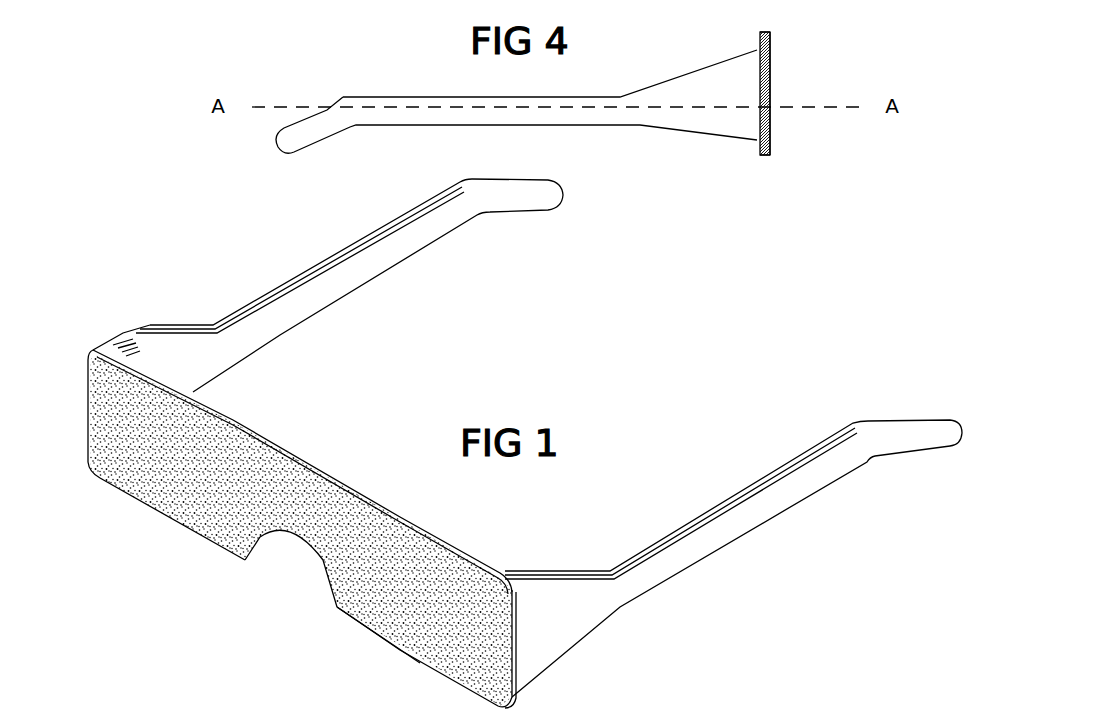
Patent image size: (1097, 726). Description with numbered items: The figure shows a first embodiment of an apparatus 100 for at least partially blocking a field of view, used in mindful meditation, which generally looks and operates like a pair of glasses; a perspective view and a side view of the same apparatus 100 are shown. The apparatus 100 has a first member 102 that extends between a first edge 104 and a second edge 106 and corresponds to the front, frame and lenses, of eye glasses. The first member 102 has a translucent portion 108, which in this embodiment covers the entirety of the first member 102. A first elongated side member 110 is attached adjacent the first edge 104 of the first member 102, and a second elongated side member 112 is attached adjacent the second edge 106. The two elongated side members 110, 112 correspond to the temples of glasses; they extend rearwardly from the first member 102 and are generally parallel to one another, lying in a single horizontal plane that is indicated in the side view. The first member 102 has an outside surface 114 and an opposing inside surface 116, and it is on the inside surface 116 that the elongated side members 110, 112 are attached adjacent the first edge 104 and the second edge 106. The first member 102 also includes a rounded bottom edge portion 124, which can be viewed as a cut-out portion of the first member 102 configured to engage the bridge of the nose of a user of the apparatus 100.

In FIG. 4, the apparatus 100 is at (240, 145).
In FIG. 1, the apparatus 100 is at (860, 500).
In FIG. 4, the first member 102 is at (770, 135).
In FIG. 1, the first member 102 is at (445, 540).
In FIG. 4, the first edge 104 is at (765, 155).
In FIG. 1, the first edge 104 is at (85, 390).
In FIG. 1, the second edge 106 is at (510, 700).
In FIG. 1, the translucent portion 108 is at (365, 632).
In FIG. 4, the first elongated side member 110 is at (700, 130).
In FIG. 1, the first elongated side member 110 is at (245, 305).
In FIG. 1, the second elongated side member 112 is at (508, 575).
In FIG. 4, the outside surface 114 is at (770, 37).
In FIG. 1, the outside surface 114 is at (205, 518).
In FIG. 4, the inside surface 116 is at (760, 45).
In FIG. 1, the inside surface 116 is at (302, 459).
In FIG. 1, the rounded bottom edge portion 124 is at (327, 572).